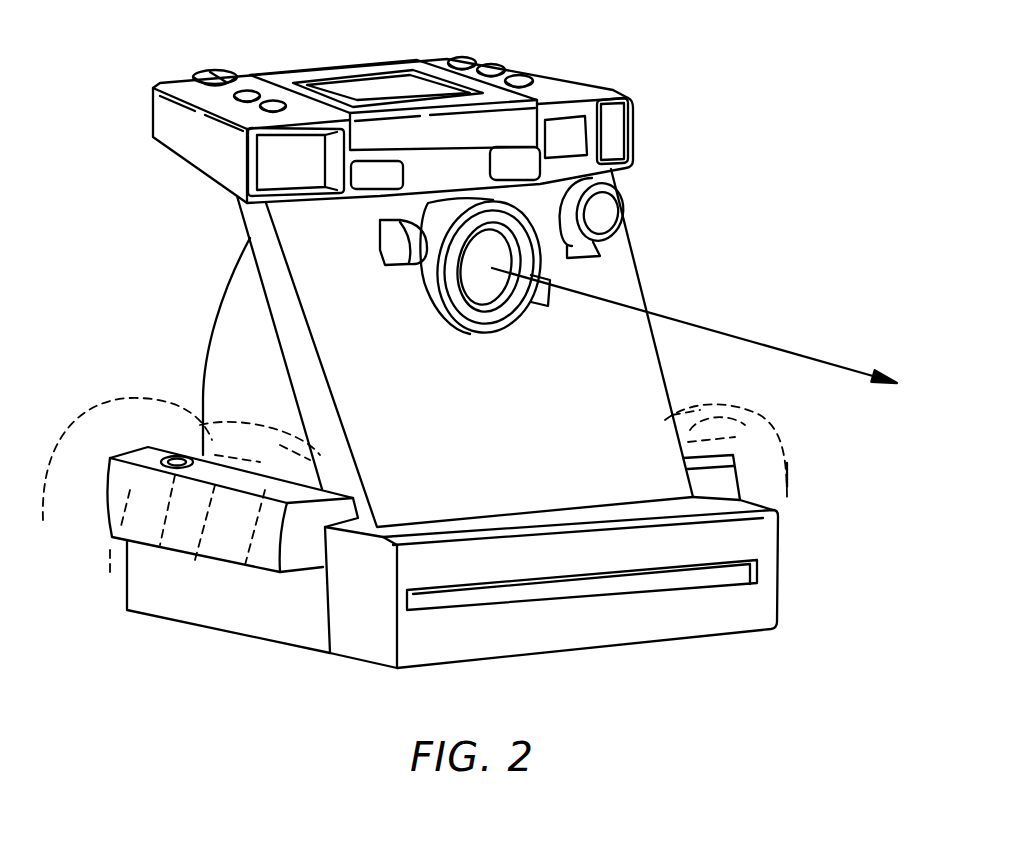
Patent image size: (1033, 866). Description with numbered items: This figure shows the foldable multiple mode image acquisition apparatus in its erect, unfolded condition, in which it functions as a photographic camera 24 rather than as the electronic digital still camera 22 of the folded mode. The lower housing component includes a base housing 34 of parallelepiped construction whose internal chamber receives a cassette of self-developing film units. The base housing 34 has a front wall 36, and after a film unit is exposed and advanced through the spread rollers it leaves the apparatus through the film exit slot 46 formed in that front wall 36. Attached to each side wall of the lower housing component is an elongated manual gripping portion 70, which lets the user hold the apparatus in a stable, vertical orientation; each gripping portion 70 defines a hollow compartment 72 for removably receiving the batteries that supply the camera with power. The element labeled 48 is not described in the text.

The electronic digital still camera 22 is at (470, 350).
The photographic camera 24 is at (662, 320).
The base housing 34 is at (238, 300).
The front wall 36 is at (498, 598).
The film exit slot 46 is at (175, 453).
The film exit slot 48 is at (733, 576).
The manual gripping portions 70 is at (688, 460).
The hollow compartments 72 is at (788, 474).